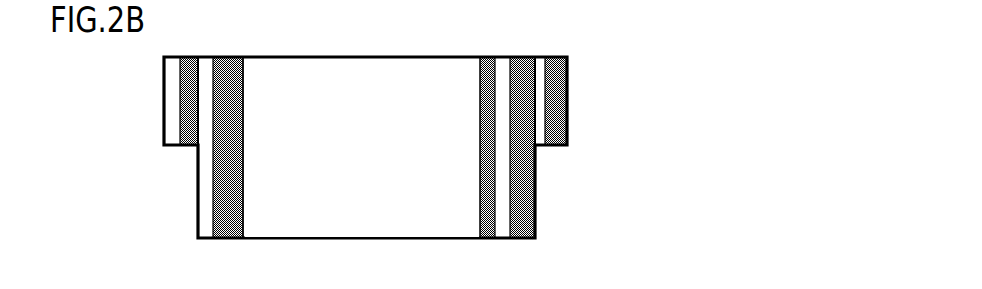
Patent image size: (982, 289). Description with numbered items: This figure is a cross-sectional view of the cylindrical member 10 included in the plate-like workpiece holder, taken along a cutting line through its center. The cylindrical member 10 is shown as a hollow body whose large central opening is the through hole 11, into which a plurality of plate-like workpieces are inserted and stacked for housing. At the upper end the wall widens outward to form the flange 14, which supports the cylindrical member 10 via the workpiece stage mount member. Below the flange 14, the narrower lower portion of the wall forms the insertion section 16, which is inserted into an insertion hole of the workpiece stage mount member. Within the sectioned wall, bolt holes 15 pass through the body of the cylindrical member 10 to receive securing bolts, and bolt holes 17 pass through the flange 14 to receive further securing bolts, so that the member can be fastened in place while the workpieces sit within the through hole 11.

The cylindrical member 10 is at (589, 107).
The through hole 11 is at (370, 93).
The flange 14 is at (568, 83).
The bolt holes 15 is at (503, 70).
The insertion section 16 is at (535, 197).
The bolt holes 17 is at (542, 72).